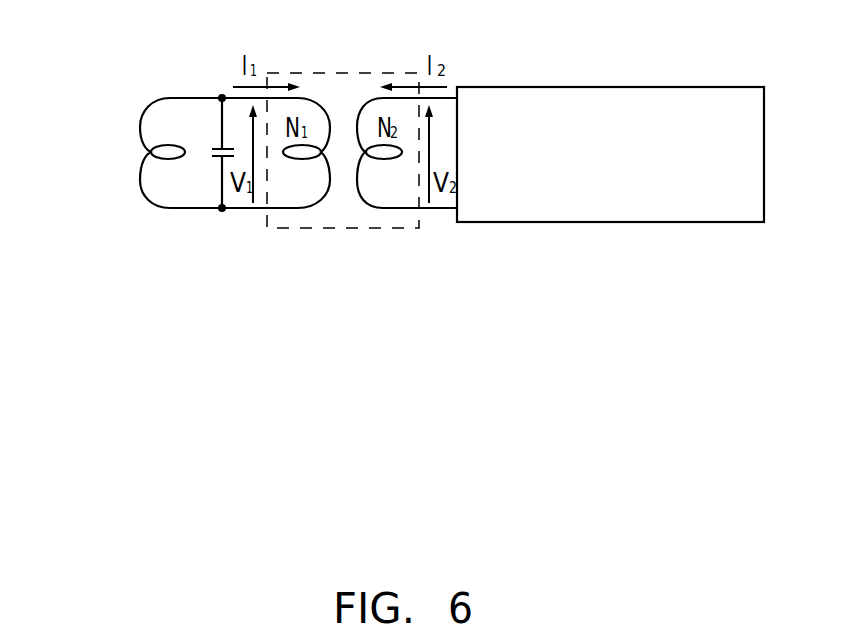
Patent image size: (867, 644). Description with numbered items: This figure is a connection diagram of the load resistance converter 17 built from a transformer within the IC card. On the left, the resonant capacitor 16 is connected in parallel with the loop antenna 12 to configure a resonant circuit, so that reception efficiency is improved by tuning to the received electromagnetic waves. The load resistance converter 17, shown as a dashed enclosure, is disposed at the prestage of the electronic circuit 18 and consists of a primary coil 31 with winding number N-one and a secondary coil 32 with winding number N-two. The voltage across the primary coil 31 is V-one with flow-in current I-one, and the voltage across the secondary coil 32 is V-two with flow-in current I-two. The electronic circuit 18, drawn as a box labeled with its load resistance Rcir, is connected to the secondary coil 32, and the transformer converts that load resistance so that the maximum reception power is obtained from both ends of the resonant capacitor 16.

The loop antenna 12 is at (145, 117).
The resonant capacitor 16 is at (213, 150).
The load resistance converter 17 is at (300, 73).
The electronic circuit 18 is at (588, 86).
The primary coil 31 is at (327, 122).
The secondary coil 32 is at (358, 122).